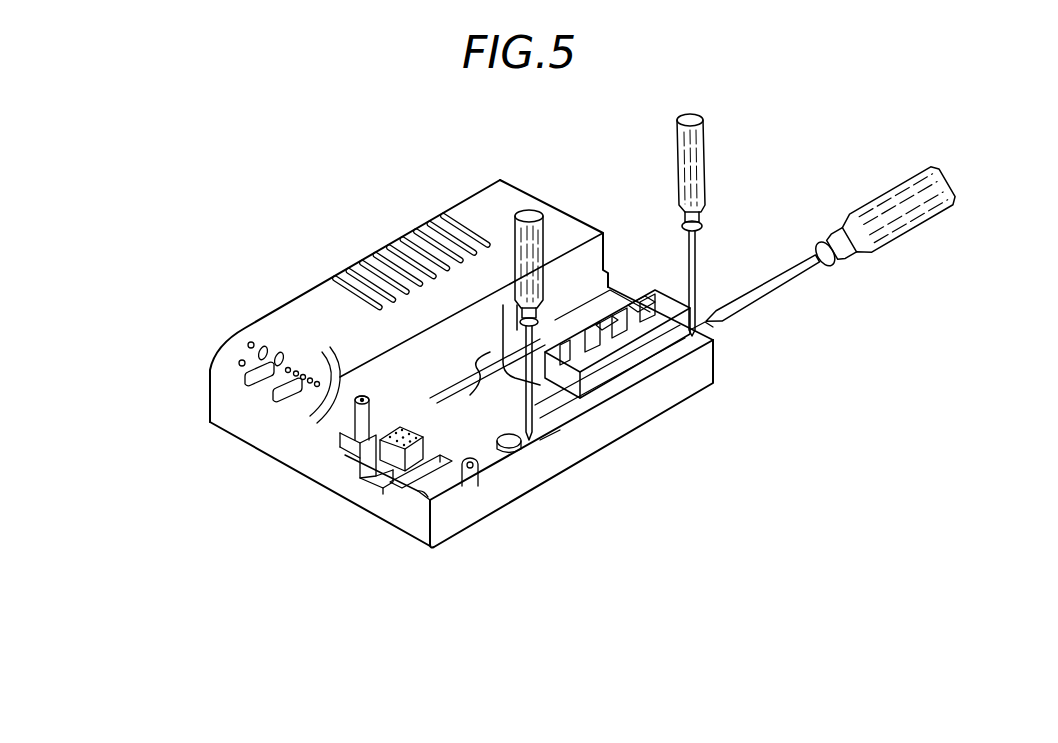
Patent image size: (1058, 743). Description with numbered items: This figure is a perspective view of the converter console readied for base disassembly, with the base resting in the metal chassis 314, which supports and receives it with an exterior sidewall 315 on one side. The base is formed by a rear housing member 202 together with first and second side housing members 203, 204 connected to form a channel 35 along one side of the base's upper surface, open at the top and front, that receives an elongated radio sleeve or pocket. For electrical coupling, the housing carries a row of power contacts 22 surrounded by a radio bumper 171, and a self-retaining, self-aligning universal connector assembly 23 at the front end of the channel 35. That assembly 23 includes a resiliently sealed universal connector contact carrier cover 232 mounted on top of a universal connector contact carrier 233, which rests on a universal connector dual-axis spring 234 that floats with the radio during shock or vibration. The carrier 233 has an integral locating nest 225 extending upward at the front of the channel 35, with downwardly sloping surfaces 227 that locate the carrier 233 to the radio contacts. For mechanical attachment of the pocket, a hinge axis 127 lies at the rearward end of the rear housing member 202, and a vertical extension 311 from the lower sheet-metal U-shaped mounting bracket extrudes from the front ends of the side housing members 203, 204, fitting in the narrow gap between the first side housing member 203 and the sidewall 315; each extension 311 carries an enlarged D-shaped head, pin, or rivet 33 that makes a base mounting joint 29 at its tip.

The power contacts 22 is at (605, 322).
The universal connector assembly 23 is at (303, 437).
The base mounting joint 29 is at (470, 466).
The enlarged head, pin, or rivet 33 is at (395, 420).
The channel 35 is at (403, 488).
The hinge axis 127 is at (693, 347).
The radio bumper 171 is at (603, 373).
The rear housing member 202 is at (640, 306).
The first side housing member 203 is at (563, 410).
The second side housing member 204 is at (408, 368).
The locating nest 225 is at (370, 464).
The downwardly sloping surfaces 227 is at (342, 455).
The universal connector contact carrier cover 232 is at (362, 438).
The universal connector contact carrier 233 is at (338, 450).
The universal connector dual-axis spring 234 is at (437, 413).
The vertical extension 311 is at (469, 462).
The metal chassis 314 is at (532, 472).
The exterior sidewall 315 is at (552, 450).